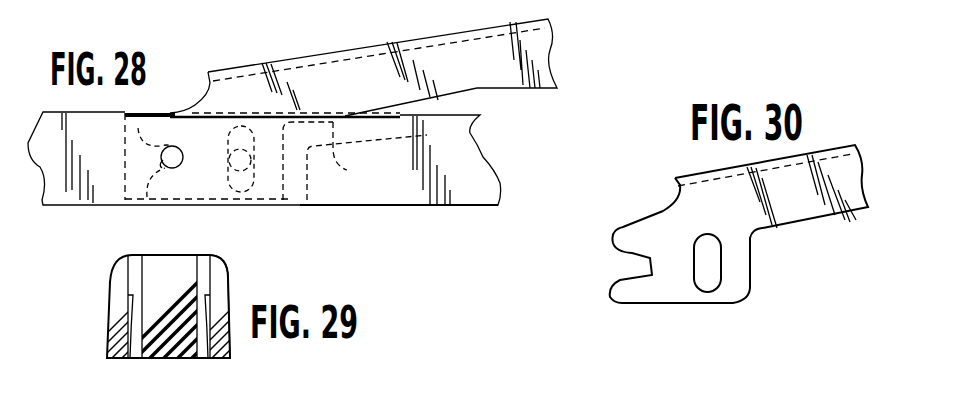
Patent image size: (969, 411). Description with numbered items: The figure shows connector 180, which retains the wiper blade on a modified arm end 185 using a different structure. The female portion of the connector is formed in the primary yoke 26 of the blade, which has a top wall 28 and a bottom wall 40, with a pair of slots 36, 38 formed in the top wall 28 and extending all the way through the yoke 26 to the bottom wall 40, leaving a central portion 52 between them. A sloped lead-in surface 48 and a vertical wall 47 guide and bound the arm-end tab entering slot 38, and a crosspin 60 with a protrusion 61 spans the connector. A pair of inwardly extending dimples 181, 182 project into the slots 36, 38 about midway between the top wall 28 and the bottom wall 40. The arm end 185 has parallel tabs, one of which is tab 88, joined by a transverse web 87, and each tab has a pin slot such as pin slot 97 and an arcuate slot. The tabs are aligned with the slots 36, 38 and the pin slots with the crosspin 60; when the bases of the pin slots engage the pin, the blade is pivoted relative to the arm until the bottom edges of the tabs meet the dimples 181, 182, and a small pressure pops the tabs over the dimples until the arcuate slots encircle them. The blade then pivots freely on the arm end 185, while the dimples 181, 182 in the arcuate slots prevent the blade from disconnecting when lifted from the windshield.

In FIG. 28, the primary yoke 26 is at (486, 157).
In FIG. 28, the top wall 28 is at (450, 111).
In FIG. 29, the top wall 28 is at (185, 254).
In FIG. 29, the slot 36 is at (135, 358).
In FIG. 28, the slot 38 is at (137, 167).
In FIG. 29, the slot 38 is at (208, 360).
In FIG. 28, the bottom wall 40 is at (465, 206).
In FIG. 29, the bottom wall 40 is at (166, 358).
In FIG. 28, the vertical wall 47 is at (285, 203).
In FIG. 28, the sloped lead-in surface 48 is at (353, 154).
In FIG. 29, the central portion 52 is at (167, 235).
In FIG. 28, the crosspin 60 is at (177, 168).
In FIG. 28, the protrusion 61 is at (160, 171).
In FIG. 30, the transverse web 87 is at (791, 153).
In FIG. 30, the tab 88 is at (740, 272).
In FIG. 28, the pin slot 97 is at (138, 140).
In FIG. 30, the pin slot 97 is at (628, 263).
In FIG. 28, the connector 180 is at (255, 62).
In FIG. 29, the dimple 181 is at (131, 361).
In FIG. 28, the dimple 182 is at (245, 185).
In FIG. 29, the dimple 182 is at (203, 360).
In FIG. 30, the dimple 182 is at (712, 268).
In FIG. 28, the arm end 185 is at (555, 63).
In FIG. 30, the arm end 185 is at (866, 154).